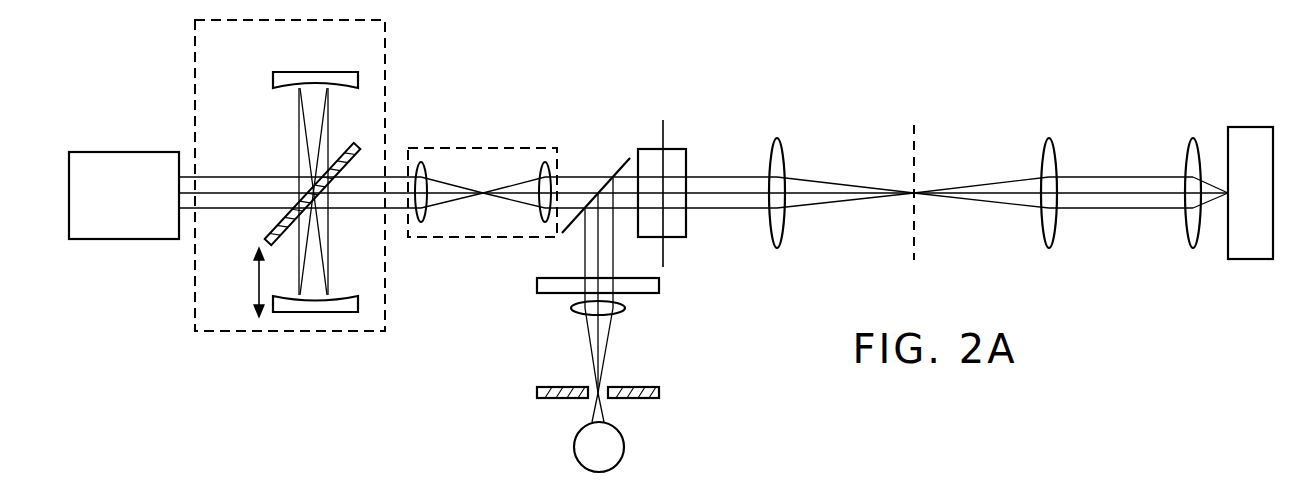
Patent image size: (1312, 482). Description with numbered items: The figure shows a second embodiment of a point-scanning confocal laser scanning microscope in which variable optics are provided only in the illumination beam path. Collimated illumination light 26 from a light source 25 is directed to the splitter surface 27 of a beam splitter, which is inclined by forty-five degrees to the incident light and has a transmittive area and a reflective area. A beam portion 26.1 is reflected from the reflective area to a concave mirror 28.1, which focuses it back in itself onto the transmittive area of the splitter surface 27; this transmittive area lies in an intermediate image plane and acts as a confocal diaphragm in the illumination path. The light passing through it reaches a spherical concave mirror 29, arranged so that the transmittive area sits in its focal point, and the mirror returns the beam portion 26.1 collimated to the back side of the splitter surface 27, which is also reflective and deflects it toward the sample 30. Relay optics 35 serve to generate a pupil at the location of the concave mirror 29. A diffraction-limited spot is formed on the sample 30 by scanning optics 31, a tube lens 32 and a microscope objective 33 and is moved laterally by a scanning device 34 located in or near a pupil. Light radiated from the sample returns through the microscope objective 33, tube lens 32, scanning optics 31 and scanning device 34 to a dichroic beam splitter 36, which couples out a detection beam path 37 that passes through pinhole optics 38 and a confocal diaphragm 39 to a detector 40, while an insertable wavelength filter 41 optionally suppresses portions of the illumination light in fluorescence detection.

The light source 25 is at (96, 152).
The illumination light 26 is at (227, 205).
The beam portion 26.1 is at (298, 167).
The splitter surface 27 is at (362, 154).
The first cavity mirror 28.1 is at (273, 80).
The spherical concave mirror 29 is at (330, 313).
The sample 30 is at (1247, 127).
The scanning optics 31 is at (785, 138).
The tube lens 32 is at (1053, 138).
The microscope objective 33 is at (1192, 140).
The scanning device 34 is at (692, 155).
The relay optics 35 is at (492, 148).
The dichroic beam splitter 36 is at (617, 161).
The detection beam path 37 is at (584, 252).
The pinhole optics 38 is at (573, 310).
The confocal diaphragm 39 is at (660, 391).
The detector 40 is at (574, 447).
The insertable wavelength filter 41 is at (648, 293).